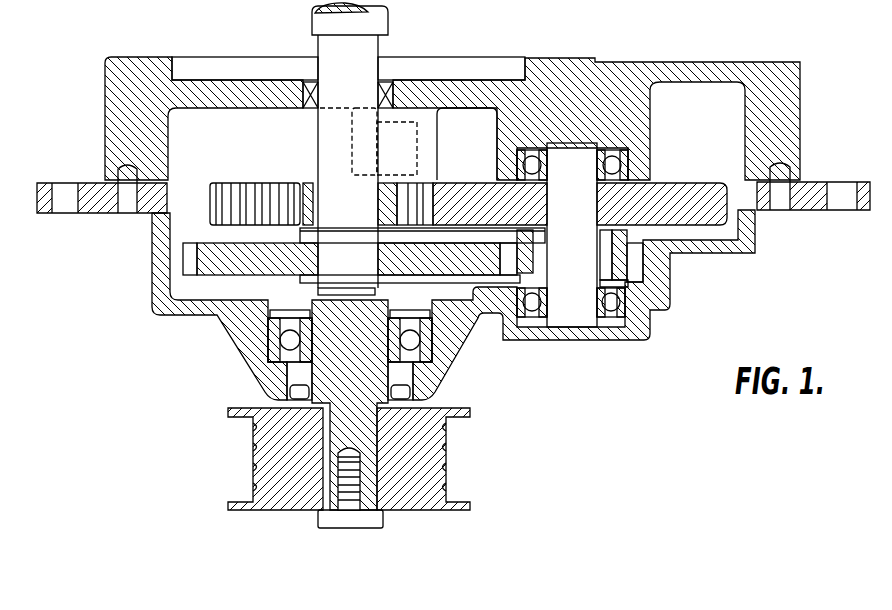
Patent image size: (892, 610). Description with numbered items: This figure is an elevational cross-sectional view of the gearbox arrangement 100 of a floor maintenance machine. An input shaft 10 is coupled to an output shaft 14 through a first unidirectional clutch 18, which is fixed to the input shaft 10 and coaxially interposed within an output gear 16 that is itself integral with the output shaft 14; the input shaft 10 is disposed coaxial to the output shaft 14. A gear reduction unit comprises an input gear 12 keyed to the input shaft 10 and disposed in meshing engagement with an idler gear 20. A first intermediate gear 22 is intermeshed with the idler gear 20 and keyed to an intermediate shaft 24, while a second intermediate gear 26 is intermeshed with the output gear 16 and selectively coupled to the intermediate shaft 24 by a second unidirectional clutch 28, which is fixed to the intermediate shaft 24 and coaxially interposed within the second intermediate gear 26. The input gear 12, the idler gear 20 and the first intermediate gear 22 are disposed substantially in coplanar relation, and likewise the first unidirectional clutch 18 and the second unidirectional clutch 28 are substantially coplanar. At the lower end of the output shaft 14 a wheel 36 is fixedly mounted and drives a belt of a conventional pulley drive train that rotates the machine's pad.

The gearbox arrangement 100 is at (200, 344).
The input shaft 10 is at (363, 55).
The input gear 12 is at (306, 182).
The output shaft 14 is at (363, 490).
The output gear 16 is at (473, 283).
The first unidirectional clutch 18 is at (300, 262).
The idler gear 20 is at (255, 182).
The first intermediate gear 22 is at (665, 187).
The intermediate shaft 24 is at (577, 160).
The second intermediate gear 26 is at (638, 267).
The second unidirectional clutch 28 is at (602, 257).
The wheel 36 is at (445, 455).